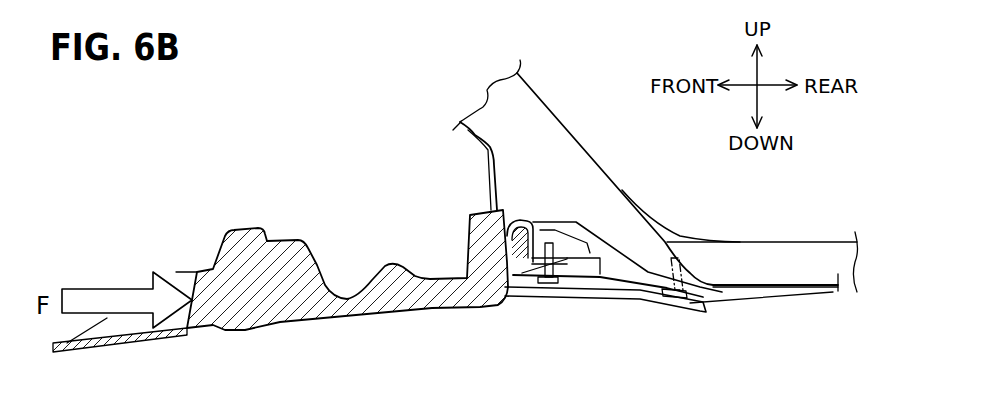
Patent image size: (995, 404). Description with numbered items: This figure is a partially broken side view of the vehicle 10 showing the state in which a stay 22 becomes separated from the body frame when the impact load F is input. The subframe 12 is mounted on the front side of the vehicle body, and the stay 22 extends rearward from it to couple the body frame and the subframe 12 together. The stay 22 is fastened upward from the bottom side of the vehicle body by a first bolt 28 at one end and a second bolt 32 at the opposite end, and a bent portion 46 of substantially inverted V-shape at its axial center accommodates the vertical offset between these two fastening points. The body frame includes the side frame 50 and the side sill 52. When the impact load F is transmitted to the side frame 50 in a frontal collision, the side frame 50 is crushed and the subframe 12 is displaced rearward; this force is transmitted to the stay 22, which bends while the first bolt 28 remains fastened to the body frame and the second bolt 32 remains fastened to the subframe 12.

The vehicle 10 is at (604, 85).
The subframe 12 is at (336, 320).
The stay 22 is at (600, 280).
The first bolt 28 is at (672, 302).
The second bolt 32 is at (548, 290).
The bent portion 46 is at (628, 300).
The side frame 50 is at (604, 210).
The side sill 52 is at (838, 292).